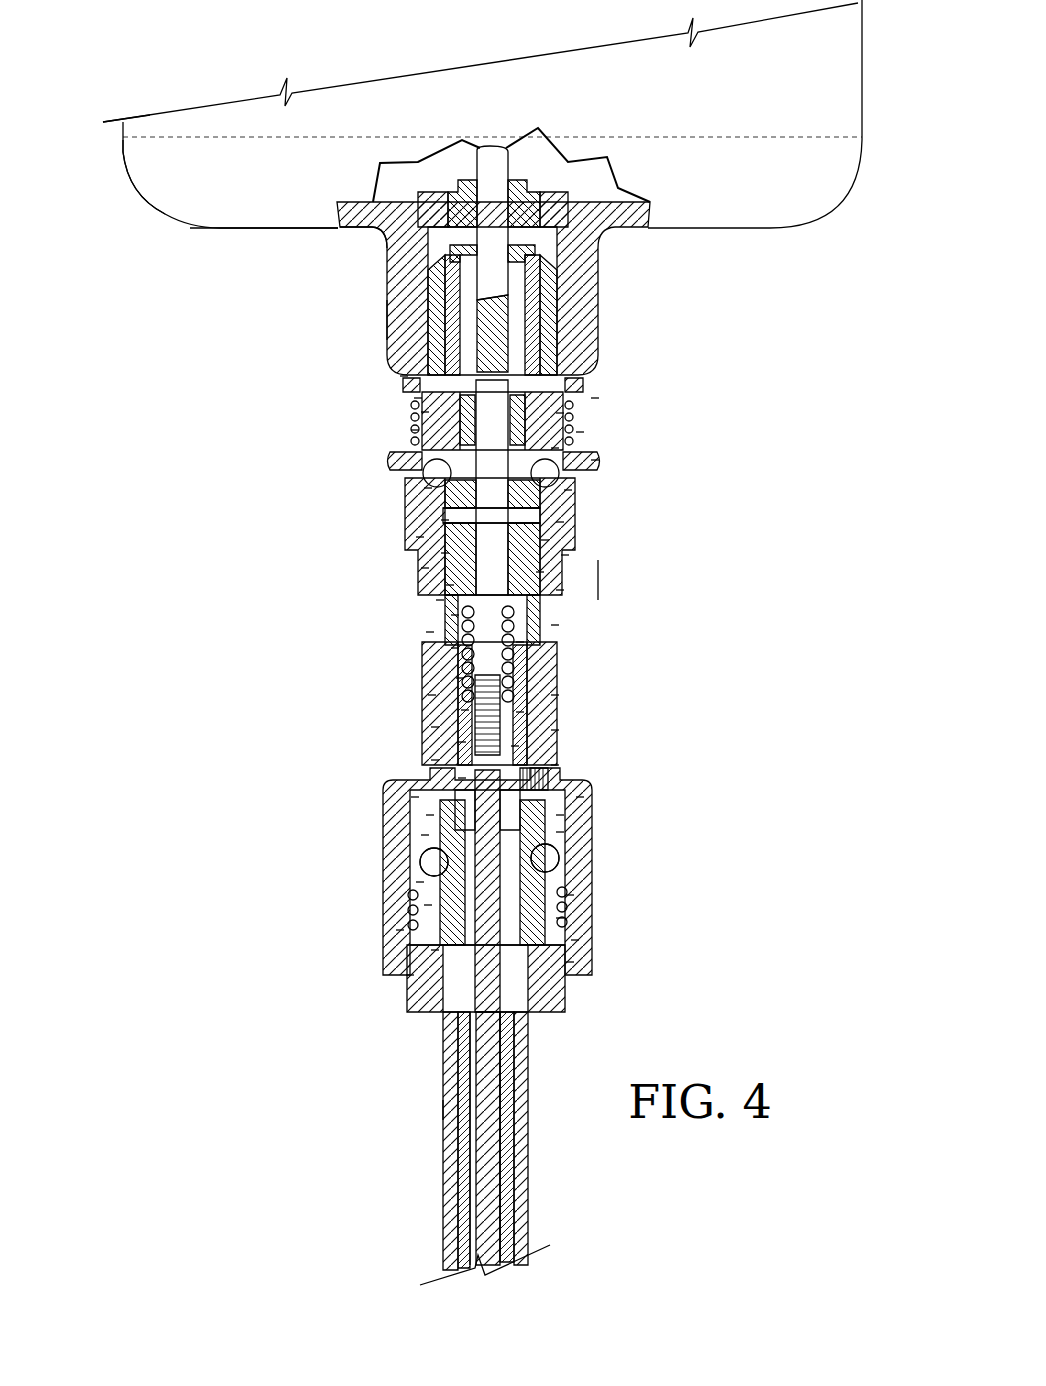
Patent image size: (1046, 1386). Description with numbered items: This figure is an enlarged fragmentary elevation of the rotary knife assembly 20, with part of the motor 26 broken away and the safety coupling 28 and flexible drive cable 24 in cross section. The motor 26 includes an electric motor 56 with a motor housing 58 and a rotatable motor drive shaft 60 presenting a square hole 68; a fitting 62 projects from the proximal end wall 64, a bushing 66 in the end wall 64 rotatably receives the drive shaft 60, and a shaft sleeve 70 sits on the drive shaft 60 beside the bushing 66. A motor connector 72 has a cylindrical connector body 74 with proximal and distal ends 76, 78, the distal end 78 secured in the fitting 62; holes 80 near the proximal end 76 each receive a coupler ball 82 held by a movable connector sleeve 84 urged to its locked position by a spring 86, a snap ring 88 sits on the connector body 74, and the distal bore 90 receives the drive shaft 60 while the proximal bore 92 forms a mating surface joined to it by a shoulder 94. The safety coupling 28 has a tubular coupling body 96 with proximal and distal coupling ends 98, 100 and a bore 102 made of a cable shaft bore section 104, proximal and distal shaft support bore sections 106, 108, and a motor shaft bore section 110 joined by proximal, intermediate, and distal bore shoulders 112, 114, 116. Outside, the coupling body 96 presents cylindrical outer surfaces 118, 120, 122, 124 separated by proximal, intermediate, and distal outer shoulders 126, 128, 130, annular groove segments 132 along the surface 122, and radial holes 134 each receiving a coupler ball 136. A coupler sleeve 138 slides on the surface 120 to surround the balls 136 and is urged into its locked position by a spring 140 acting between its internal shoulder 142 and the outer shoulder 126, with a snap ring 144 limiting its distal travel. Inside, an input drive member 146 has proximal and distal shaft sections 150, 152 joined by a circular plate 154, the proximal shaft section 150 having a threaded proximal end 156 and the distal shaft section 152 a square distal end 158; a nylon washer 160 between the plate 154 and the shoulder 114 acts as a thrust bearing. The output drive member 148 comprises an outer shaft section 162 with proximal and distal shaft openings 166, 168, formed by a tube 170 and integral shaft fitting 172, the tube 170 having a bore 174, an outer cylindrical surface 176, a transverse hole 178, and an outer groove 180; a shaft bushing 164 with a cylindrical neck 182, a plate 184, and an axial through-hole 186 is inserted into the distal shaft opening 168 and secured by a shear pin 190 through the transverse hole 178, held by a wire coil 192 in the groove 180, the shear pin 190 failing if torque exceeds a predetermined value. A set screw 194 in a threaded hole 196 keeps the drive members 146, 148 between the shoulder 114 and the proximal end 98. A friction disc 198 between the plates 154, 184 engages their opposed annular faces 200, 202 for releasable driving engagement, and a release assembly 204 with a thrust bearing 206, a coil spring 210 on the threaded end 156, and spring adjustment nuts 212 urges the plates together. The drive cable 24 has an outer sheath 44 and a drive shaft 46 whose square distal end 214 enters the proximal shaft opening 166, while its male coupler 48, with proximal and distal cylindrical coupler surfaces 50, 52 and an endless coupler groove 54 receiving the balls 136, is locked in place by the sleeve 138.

The rotary knife assembly 20 is at (172, 56).
The flexible drive cable 24 is at (530, 1218).
The motor 26 is at (840, 85).
The safety coupling 28 is at (580, 797).
The outer sheath 44 is at (520, 1138).
The drive shaft 46 is at (487, 1053).
The male coupler 48 is at (400, 930).
The proximal cylindrical coupler surface 50 is at (575, 940).
The distal cylindrical coupler surface 52 is at (580, 850).
The endless coupler groove 54 is at (420, 862).
The electric motor 56 is at (160, 172).
The motor housing 58 is at (218, 212).
The motor drive shaft 60 is at (490, 237).
The fitting 62 is at (596, 268).
The proximal end wall 64 is at (360, 218).
The bushing 66 is at (543, 203).
The square hole 68 is at (540, 355).
The shaft sleeve 70 is at (560, 318).
The motor connector 72 is at (595, 460).
The connector body 74 is at (545, 300).
The proximal end 76 is at (672, 574).
The distal end 78 is at (370, 313).
The holes 80 is at (568, 490).
The coupler ball 82 is at (520, 510).
The movable connector sleeve 84 is at (520, 522).
The spring 86 is at (580, 432).
The snap ring 88 is at (575, 380).
The distal bore 90 is at (500, 340).
The proximal bore 92 is at (418, 505).
The shoulder 94 is at (555, 448).
The coupling body 96 is at (462, 778).
The proximal coupling end 98 is at (370, 1070).
The distal coupling end 100 is at (290, 397).
The bore 102 is at (515, 746).
The cable shaft bore section 104 is at (410, 975).
The proximal shaft support bore section 106 is at (425, 835).
The distal shaft support bore section 108 is at (560, 413).
The motor shaft bore section 110 is at (595, 398).
The proximal bore shoulder 112 is at (558, 862).
The intermediate bore shoulder 114 is at (428, 488).
The distal bore shoulder 116 is at (425, 412).
The cylindrical outer surface 118 is at (425, 998).
The cylindrical outer surface 120 is at (520, 712).
The cylindrical outer surface 122 is at (550, 660).
The cylindrical outer surface 124 is at (418, 398).
The proximal outer shoulder 126 is at (435, 950).
The intermediate outer shoulder 128 is at (430, 662).
The distal outer shoulder 130 is at (415, 430).
The annular groove segments 132 is at (398, 458).
The radial holes 134 is at (420, 882).
The coupler ball 136 is at (570, 895).
The coupler sleeve 138 is at (560, 918).
The spring 140 is at (570, 962).
The internal shoulder 142 is at (428, 905).
The snap ring 144 is at (548, 780).
The input drive member 146 is at (545, 540).
The output drive member 148 is at (520, 642).
The proximal shaft section 150 is at (495, 677).
The distal shaft section 152 is at (425, 465).
The circular plate 154 is at (445, 520).
The threaded proximal end 156 is at (435, 760).
The square distal end 158 is at (405, 380).
The washer 160 is at (560, 522).
The outer shaft section 162 is at (555, 730).
The shaft bushing 164 is at (540, 572).
The proximal shaft opening 166 is at (430, 815).
The distal shaft opening 168 is at (450, 585).
The tube 170 is at (465, 710).
The shaft fitting 172 is at (560, 832).
The bore 174 is at (432, 695).
The outer cylindrical surface 176 is at (435, 727).
The transverse hole 178 is at (540, 608).
The outer groove 180 is at (455, 615).
The cylindrical neck 182 is at (430, 632).
The plate 184 is at (425, 568).
The through-hole 186 is at (555, 625).
The shear pin 190 is at (560, 590).
The wire coil 192 is at (440, 600).
The set screw 194 is at (555, 765).
The threaded hole 196 is at (560, 815).
The friction disc 198 is at (565, 555).
The annular face 200 is at (420, 537).
The annular face 202 is at (445, 553).
The release assembly 204 is at (460, 678).
The thrust bearing 206 is at (455, 648).
The coil spring 210 is at (555, 695).
The spring adjustment nuts 212 is at (462, 742).
The square distal end 214 is at (415, 797).